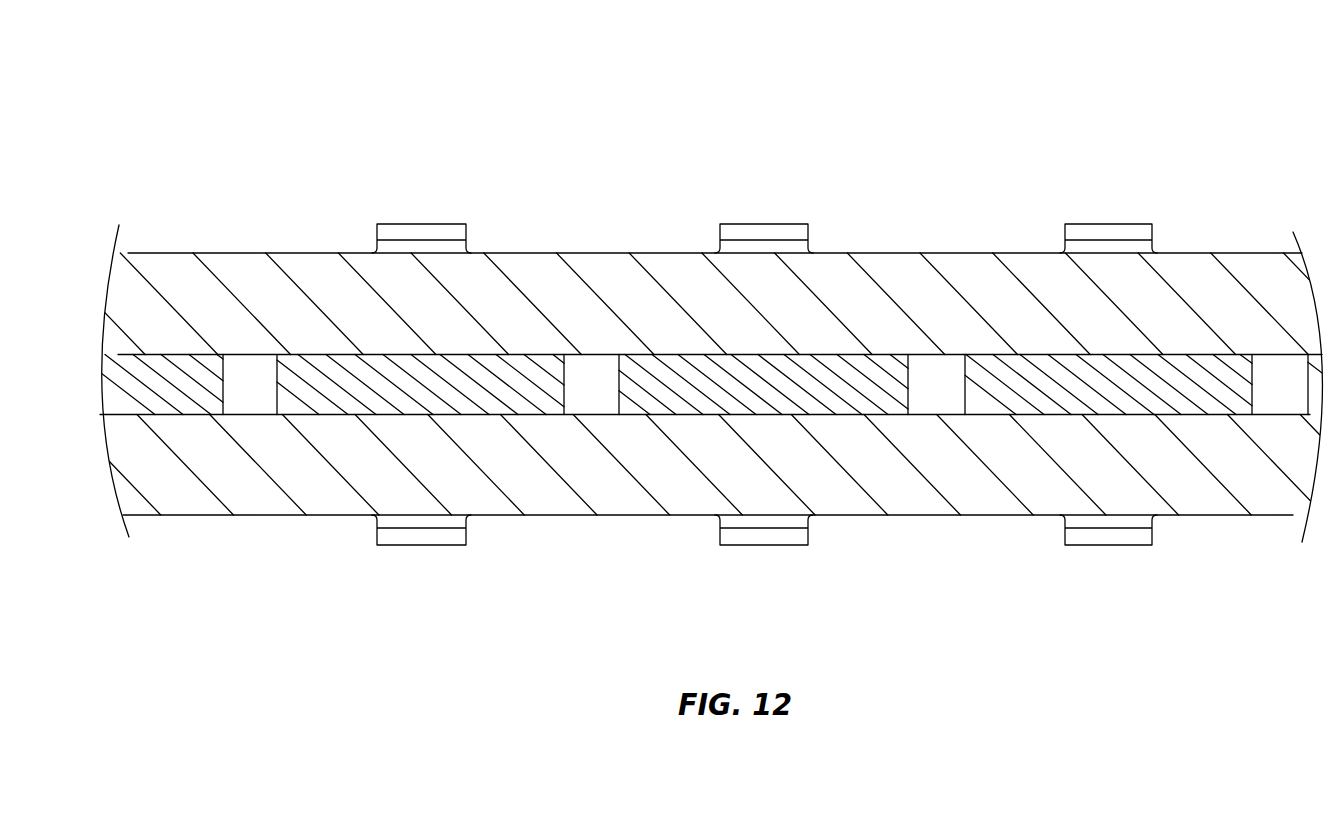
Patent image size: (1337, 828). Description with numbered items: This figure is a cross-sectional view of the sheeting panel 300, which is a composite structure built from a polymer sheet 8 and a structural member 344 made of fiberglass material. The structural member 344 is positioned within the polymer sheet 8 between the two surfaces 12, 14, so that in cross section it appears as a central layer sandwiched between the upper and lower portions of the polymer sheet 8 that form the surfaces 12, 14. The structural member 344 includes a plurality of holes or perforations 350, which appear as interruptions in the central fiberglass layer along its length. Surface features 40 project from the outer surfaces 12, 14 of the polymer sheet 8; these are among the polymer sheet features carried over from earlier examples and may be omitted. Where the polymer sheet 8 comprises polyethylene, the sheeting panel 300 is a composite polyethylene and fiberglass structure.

The sheeting panel 300 is at (797, 130).
The surface 12 is at (942, 253).
The surface 14 is at (912, 517).
The polymer sheet 8 is at (1020, 518).
The surface features 40 is at (427, 230).
The structural member 344 is at (695, 428).
The holes or perforations 350 is at (587, 387).